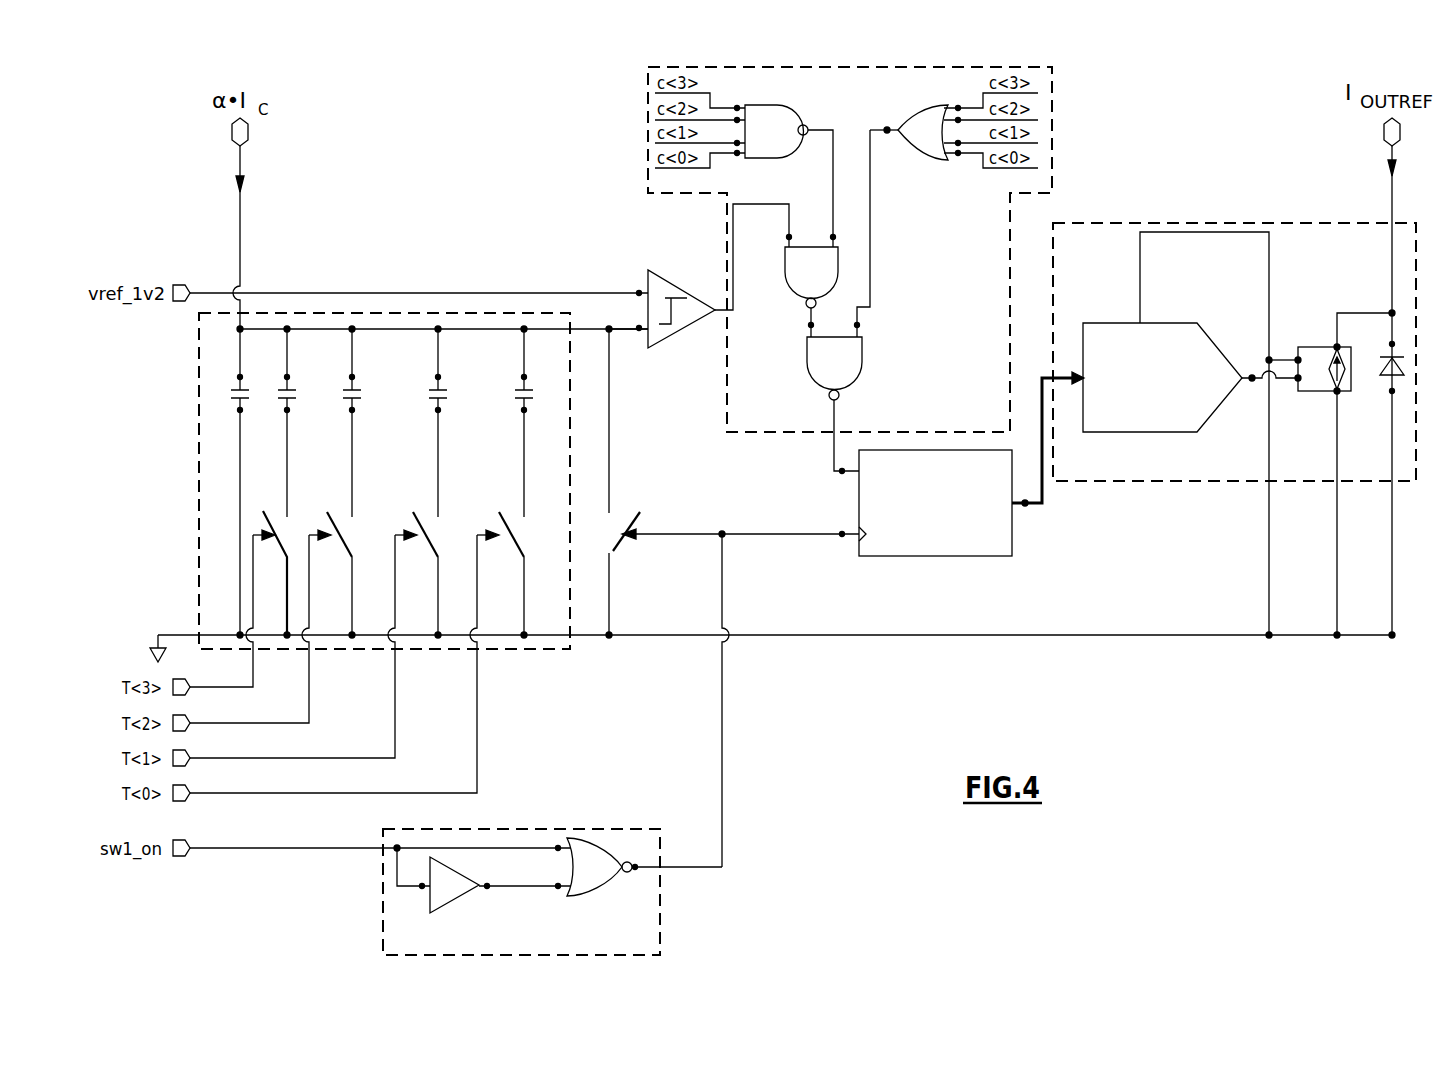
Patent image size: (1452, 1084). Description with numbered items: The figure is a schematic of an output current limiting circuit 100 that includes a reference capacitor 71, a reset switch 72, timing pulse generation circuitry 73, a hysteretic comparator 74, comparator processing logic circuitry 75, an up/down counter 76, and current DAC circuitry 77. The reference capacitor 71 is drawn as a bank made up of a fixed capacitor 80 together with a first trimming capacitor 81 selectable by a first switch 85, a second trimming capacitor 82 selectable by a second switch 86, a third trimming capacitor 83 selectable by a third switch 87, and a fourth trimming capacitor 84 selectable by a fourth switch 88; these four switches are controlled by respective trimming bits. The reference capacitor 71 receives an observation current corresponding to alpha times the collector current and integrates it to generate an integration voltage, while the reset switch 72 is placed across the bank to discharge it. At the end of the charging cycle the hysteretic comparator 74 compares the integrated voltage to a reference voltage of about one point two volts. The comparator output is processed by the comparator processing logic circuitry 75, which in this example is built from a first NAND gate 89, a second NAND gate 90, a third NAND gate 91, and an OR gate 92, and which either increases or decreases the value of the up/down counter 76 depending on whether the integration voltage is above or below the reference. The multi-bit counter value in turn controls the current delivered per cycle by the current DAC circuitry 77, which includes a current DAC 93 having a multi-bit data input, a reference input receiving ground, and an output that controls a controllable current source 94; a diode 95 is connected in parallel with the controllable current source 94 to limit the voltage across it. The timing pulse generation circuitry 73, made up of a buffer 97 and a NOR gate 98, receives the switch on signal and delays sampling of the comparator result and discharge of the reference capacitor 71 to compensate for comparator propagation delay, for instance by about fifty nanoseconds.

The output current limiting circuit 100 is at (152, 99).
The reference capacitor 71 is at (199, 485).
The reset switch 72 is at (620, 548).
The timing pulse generation circuitry 73 is at (600, 829).
The hysteretic comparator 74 is at (656, 350).
The comparator processing logic circuitry 75 is at (680, 193).
The up/down counter 76 is at (1013, 544).
The current DAC circuitry 77 is at (1166, 481).
The fixed capacitor 80 is at (240, 405).
The first trimming capacitor 81 is at (287, 405).
The second trimming capacitor 82 is at (352, 405).
The third trimming capacitor 83 is at (438, 405).
The fourth trimming capacitor 84 is at (524, 405).
The first switch 85 is at (283, 544).
The second switch 86 is at (328, 514).
The third switch 87 is at (408, 515).
The fourth switch 88 is at (494, 517).
The first NAND gate 89 is at (791, 105).
The second NAND gate 90 is at (793, 296).
The third NAND gate 91 is at (863, 381).
The OR gate 92 is at (928, 160).
The current DAC 93 is at (1178, 323).
The controllable current source 94 is at (1331, 347).
The diode 95 is at (1402, 363).
The buffer 97 is at (451, 900).
The NOR gate 98 is at (585, 896).